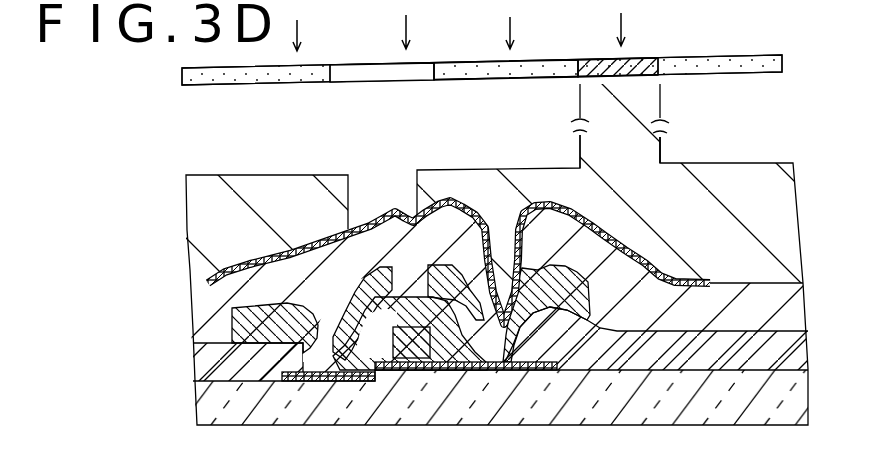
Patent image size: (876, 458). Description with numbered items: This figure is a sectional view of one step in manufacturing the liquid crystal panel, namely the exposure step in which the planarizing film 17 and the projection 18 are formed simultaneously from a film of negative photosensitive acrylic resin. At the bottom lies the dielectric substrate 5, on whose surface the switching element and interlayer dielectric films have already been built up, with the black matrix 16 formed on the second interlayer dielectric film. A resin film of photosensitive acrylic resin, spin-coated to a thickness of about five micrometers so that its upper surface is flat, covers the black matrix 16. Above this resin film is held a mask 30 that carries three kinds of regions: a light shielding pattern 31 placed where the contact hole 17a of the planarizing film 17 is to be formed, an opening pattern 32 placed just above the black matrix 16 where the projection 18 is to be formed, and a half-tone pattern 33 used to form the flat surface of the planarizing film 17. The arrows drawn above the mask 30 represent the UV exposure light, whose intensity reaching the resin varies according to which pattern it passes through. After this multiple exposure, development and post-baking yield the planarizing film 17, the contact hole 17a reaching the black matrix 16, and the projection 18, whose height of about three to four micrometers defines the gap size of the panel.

The mask 30 is at (771, 49).
The light shielding pattern 31 is at (428, 62).
The opening pattern 32 is at (645, 65).
The half-tone pattern 33 is at (548, 70).
The planarizing film 17 is at (777, 212).
The contact hole 17a is at (348, 197).
The projection 18 is at (660, 147).
The black matrix 16 is at (804, 278).
The dielectric substrate 5 is at (804, 388).